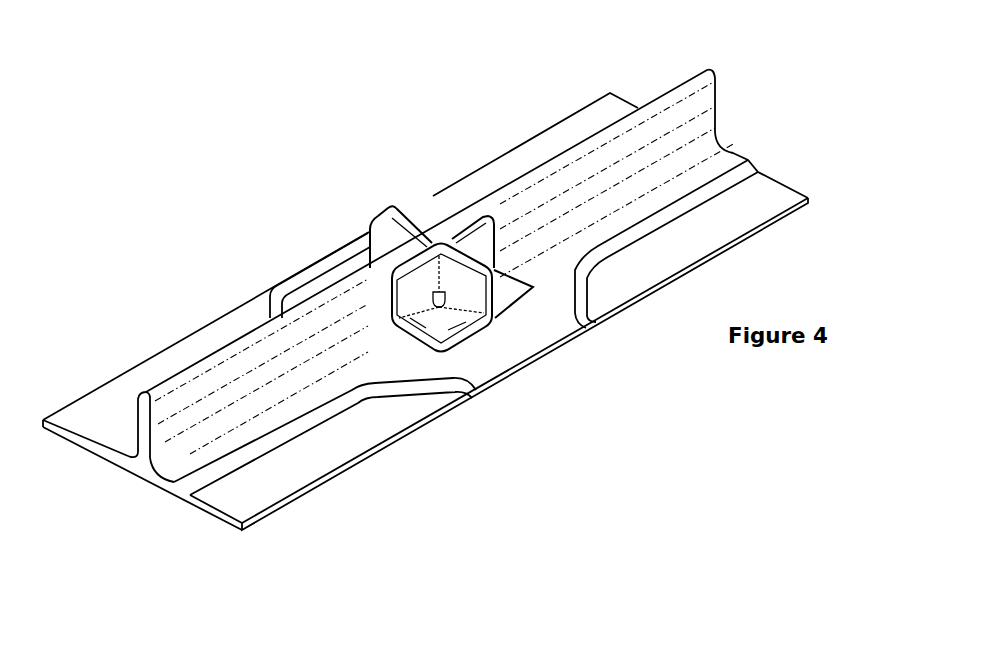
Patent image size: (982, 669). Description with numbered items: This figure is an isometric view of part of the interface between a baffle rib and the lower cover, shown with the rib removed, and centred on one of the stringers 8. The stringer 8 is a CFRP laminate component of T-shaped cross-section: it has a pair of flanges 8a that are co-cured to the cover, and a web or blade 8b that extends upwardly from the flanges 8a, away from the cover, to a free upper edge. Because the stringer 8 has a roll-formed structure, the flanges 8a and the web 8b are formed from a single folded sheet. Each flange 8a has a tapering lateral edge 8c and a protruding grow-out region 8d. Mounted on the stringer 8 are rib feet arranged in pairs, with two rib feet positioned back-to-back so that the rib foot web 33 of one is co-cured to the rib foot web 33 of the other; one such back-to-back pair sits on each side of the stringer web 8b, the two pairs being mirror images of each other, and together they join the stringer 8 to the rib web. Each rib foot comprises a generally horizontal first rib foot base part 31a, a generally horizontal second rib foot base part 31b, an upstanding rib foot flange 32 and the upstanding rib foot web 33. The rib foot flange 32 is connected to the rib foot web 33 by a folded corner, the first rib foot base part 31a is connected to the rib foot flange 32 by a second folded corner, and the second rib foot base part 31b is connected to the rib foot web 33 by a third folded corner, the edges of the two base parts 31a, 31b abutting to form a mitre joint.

The stringer 8 is at (725, 103).
The flange 8a is at (252, 433).
The web 8b is at (210, 388).
The tapering lateral edge 8c is at (402, 390).
The grow-out region 8d is at (527, 342).
The rib foot flange 32 is at (413, 287).
The rib foot web 33 is at (468, 287).
The first rib foot base part 31a is at (420, 323).
The second rib foot base part 31b is at (452, 330).